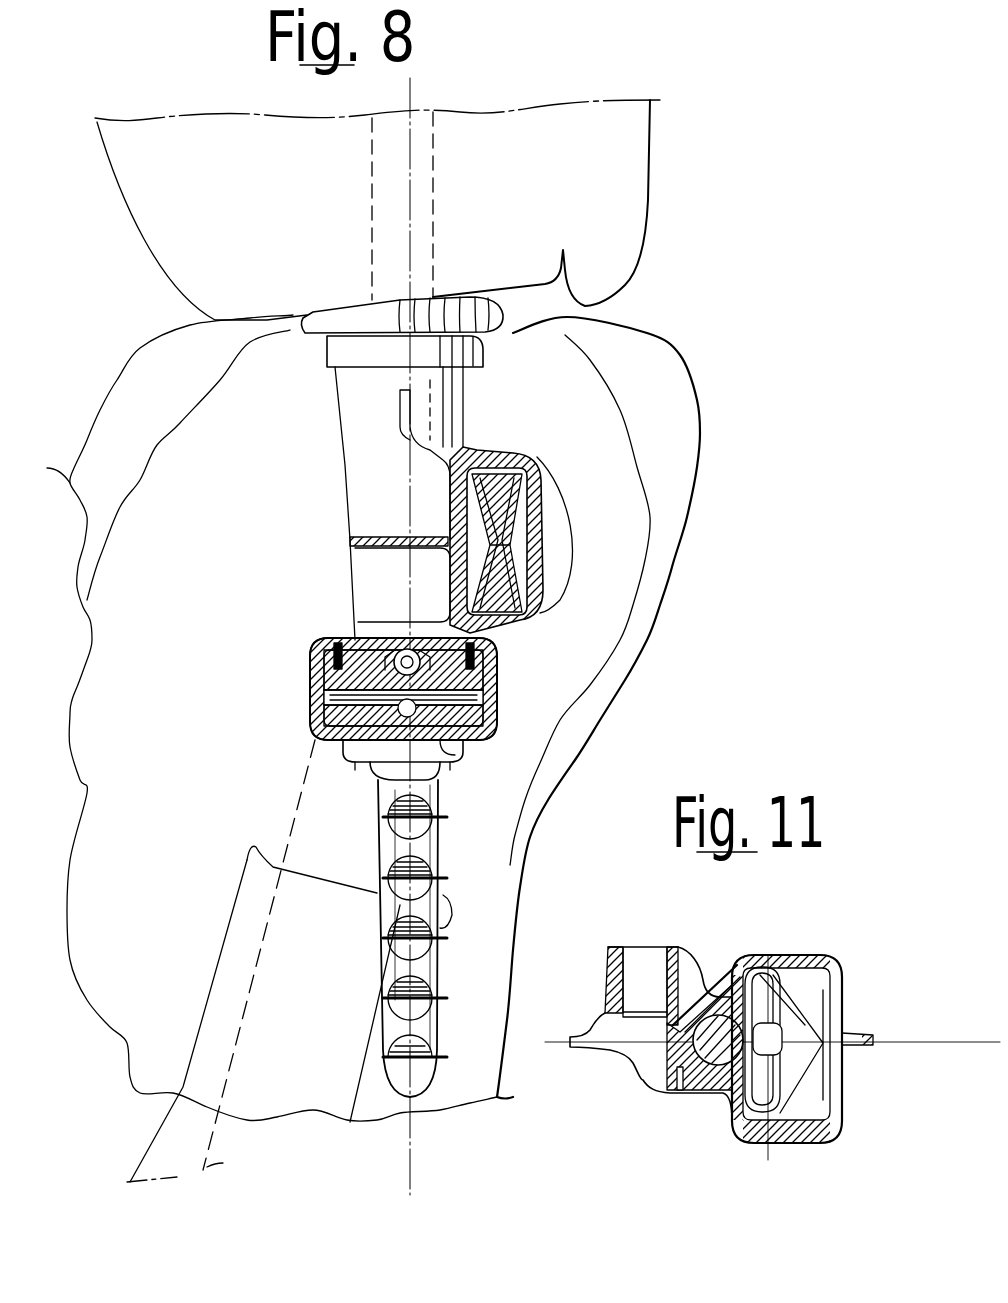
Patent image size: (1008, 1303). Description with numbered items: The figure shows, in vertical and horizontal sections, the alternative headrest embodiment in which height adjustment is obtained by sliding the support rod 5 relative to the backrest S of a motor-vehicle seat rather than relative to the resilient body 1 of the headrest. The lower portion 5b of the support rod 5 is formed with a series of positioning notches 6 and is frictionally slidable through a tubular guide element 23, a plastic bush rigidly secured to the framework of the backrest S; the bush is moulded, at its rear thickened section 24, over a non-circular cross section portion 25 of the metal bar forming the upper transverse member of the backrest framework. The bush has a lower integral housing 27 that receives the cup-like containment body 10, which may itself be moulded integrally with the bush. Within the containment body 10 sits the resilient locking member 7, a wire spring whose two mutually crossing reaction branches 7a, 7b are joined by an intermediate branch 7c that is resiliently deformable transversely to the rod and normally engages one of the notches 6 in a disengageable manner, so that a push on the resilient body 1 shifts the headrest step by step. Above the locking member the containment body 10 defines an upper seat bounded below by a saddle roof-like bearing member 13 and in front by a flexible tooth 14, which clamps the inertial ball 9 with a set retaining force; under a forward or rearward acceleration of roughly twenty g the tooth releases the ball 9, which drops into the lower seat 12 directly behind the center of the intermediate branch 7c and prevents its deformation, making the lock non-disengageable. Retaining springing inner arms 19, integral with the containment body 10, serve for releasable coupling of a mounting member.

In FIG. 8, the resilient body 1 is at (610, 178).
In FIG. 8, the support rod 5 is at (437, 291).
In FIG. 8, the lower portion 5b is at (447, 910).
In FIG. 11, the lower portion 5b is at (683, 1088).
In FIG. 8, the positioning notches 6 is at (393, 1012).
In FIG. 8, the resilient locking member 7 is at (323, 727).
In FIG. 11, the resilient locking member 7 is at (768, 962).
In FIG. 11, the reaction branch 7a is at (807, 1017).
In FIG. 11, the reaction branch 7b is at (793, 1090).
In FIG. 8, the intermediate branch 7c is at (352, 757).
In FIG. 11, the intermediate branch 7c is at (727, 1100).
In FIG. 8, the ball 9 is at (407, 647).
In FIG. 8, the containment body 10 is at (500, 712).
In FIG. 11, the containment body 10 is at (806, 950).
In FIG. 8, the lower seat 12 is at (378, 775).
In FIG. 11, the lower seat 12 is at (745, 965).
In FIG. 8, the bearing member 13 is at (340, 645).
In FIG. 8, the flexible tooth 14 is at (392, 545).
In FIG. 8, the retaining springing inner arms 19 is at (312, 672).
In FIG. 8, the tubular guide element 23 is at (343, 468).
In FIG. 8, the rear thickened section 24 is at (525, 456).
In FIG. 8, the non-circular cross section portion 25 is at (545, 502).
In FIG. 8, the lower integral housing 27 is at (312, 640).
In FIG. 11, the lower integral housing 27 is at (842, 990).
In FIG. 8, the backrest S is at (567, 393).